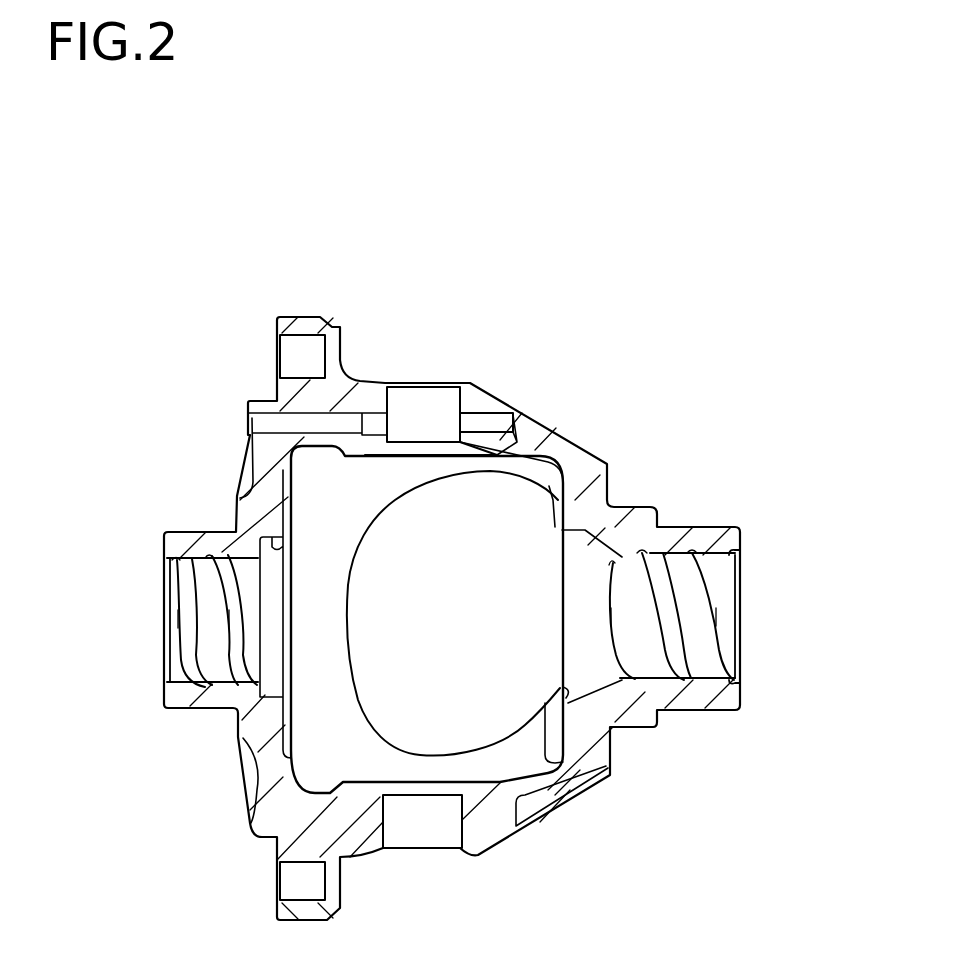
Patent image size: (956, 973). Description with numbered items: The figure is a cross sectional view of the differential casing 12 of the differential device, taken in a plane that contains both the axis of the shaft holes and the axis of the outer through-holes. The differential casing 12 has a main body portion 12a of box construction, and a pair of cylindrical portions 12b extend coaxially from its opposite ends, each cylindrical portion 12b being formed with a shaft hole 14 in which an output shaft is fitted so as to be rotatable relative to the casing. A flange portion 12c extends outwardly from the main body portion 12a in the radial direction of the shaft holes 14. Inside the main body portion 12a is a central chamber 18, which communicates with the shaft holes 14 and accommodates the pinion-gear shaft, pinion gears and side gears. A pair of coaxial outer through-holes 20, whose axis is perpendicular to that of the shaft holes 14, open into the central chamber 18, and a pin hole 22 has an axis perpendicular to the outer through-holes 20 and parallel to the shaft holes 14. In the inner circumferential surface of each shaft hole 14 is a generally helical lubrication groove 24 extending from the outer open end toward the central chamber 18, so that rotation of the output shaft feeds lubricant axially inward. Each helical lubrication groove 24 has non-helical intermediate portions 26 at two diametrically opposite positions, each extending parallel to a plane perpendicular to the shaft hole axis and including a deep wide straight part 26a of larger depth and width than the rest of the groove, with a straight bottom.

The differential casing 12 is at (581, 358).
The main body portion 12a is at (541, 450).
The cylindrical portions 12b is at (191, 540).
The flange portion 12c is at (297, 323).
The shaft holes 14 is at (182, 573).
The central chamber 18 is at (449, 655).
The outer through-holes 20 is at (390, 393).
The pin hole 22 is at (514, 420).
The helical lubrication grooves 24 is at (168, 659).
The non-helical intermediate portions 26 is at (168, 601).
The deep wide straight part 26a is at (183, 622).